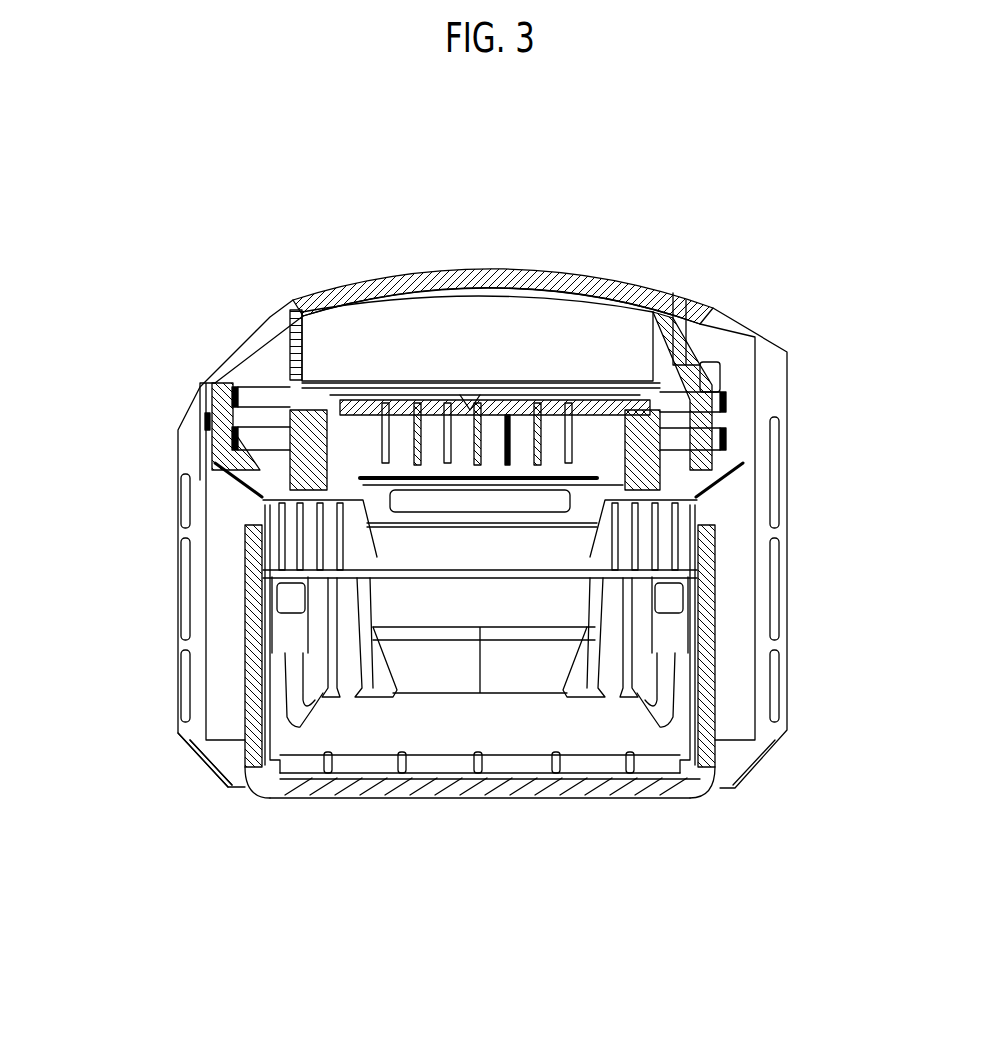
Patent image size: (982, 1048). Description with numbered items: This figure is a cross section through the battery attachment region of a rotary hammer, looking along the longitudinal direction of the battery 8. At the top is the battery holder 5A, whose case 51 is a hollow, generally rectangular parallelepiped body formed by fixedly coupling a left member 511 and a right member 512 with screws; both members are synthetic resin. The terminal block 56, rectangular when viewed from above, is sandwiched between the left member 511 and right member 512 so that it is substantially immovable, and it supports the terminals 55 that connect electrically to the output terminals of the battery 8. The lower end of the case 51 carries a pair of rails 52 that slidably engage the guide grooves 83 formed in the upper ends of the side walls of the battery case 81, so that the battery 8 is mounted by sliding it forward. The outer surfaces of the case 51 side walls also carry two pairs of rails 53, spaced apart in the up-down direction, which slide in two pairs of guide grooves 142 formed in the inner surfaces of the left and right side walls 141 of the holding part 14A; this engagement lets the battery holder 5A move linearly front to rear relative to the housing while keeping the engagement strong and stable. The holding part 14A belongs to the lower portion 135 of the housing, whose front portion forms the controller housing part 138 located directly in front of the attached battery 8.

The battery holder 5A is at (482, 492).
The holding part 14A is at (390, 381).
The battery 8 is at (485, 827).
The case 51 is at (432, 312).
The left member 511 is at (396, 260).
The right member 512 is at (595, 262).
The rails 52 is at (480, 551).
The rails 53 is at (478, 428).
The terminals 55 is at (477, 394).
The terminal block 56 is at (481, 313).
The case 81 is at (550, 638).
The guide grooves 83 is at (475, 411).
The lower portion 135 is at (156, 793).
The controller housing part 138 is at (427, 569).
The side walls 141 is at (477, 396).
The guide grooves 142 is at (478, 424).